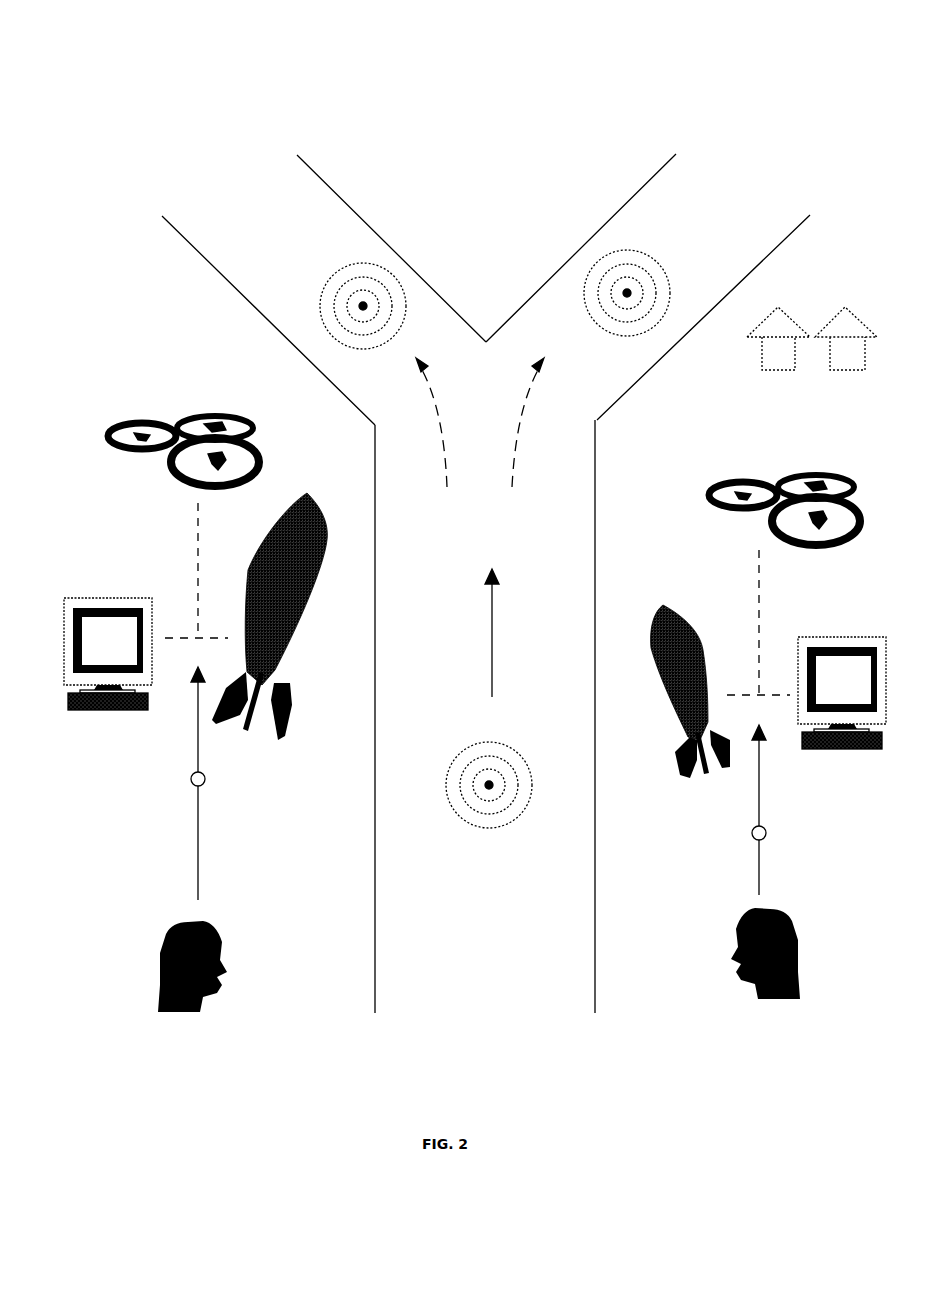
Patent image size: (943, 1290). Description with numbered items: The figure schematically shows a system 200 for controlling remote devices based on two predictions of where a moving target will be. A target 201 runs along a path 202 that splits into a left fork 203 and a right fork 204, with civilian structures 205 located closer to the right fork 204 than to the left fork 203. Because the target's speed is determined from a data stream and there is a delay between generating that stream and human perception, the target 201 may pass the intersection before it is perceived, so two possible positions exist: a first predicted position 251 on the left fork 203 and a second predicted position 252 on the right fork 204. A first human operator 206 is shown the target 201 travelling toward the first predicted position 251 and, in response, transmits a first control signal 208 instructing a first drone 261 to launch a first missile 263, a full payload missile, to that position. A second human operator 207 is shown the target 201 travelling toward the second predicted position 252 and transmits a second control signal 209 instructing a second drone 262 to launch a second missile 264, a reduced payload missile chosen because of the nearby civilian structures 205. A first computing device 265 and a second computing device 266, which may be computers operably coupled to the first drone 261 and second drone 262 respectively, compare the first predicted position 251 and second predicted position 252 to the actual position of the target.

The system 200 is at (753, 52).
The target 201 is at (489, 732).
The path 202 is at (375, 957).
The left fork 203 is at (217, 270).
The right fork 204 is at (738, 289).
The civilian structures 205 is at (811, 363).
The first human operator 206 is at (190, 1005).
The second human operator 207 is at (767, 991).
The first control signal 208 is at (203, 785).
The second control signal 209 is at (754, 839).
The first predicted position 251 is at (367, 268).
The second predicted position 252 is at (622, 255).
The first drone 261 is at (178, 527).
The second drone 262 is at (794, 585).
The first missile 263 is at (269, 649).
The second missile 264 is at (690, 729).
The first computing device 265 is at (108, 708).
The second computing device 266 is at (842, 743).